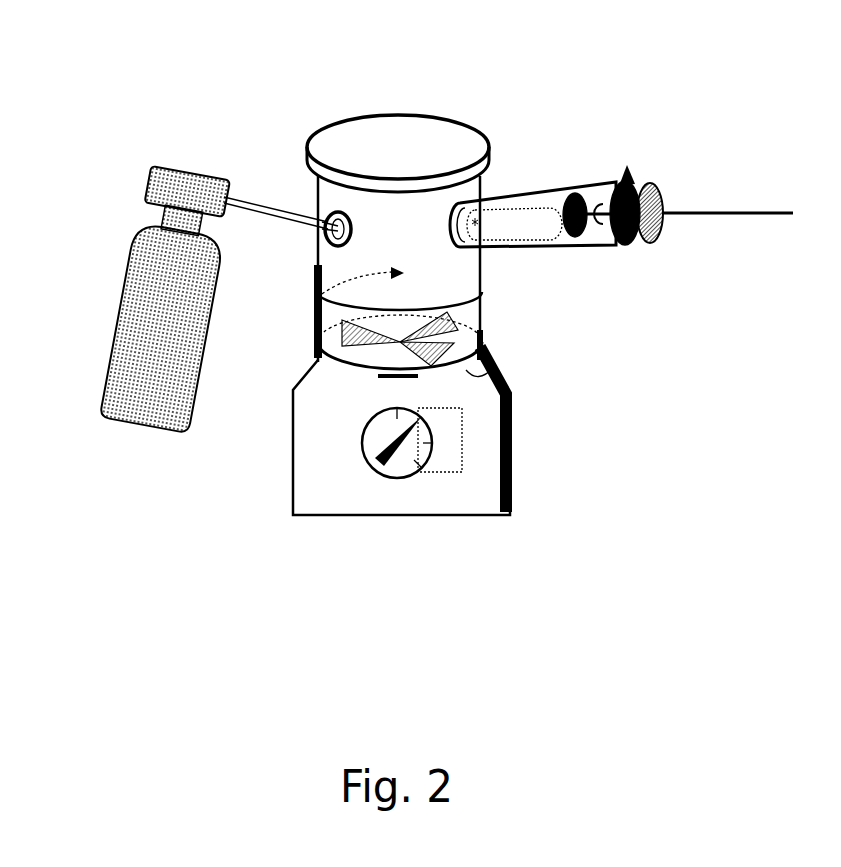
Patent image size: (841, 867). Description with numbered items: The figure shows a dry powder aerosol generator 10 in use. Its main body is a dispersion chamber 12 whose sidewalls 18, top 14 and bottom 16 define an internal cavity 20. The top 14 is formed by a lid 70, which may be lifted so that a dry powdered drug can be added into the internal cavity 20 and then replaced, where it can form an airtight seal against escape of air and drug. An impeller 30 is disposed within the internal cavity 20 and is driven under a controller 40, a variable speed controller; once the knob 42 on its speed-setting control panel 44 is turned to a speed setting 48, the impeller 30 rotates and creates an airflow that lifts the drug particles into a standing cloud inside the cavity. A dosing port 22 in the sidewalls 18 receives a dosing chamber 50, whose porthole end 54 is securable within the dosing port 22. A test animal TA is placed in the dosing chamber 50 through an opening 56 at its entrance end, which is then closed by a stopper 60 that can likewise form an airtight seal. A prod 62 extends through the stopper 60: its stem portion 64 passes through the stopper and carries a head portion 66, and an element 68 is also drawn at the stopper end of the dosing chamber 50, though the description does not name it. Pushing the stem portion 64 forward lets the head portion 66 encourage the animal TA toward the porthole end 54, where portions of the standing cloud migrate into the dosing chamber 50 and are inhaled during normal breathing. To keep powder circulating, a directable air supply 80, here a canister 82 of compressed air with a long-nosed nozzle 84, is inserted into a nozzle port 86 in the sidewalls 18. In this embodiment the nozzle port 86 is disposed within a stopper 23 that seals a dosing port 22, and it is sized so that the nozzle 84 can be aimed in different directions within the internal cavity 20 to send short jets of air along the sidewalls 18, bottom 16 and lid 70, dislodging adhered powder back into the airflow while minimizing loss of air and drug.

The dry powder aerosol generator 10 is at (244, 103).
The dispersion chamber 12 is at (388, 103).
The top 14 is at (353, 152).
The bottom 16 is at (512, 370).
The sidewalls 18 is at (483, 288).
The internal cavity 20 is at (357, 275).
The dosing port 22 is at (322, 217).
The stopper 23 is at (318, 250).
The impeller 30 is at (468, 335).
The controller 40 is at (453, 516).
The knob 42 is at (397, 460).
The control panel 44 is at (362, 446).
The speed setting 48 is at (462, 417).
The dosing chamber 50 is at (567, 248).
The porthole end 54 is at (488, 198).
The opening 56 is at (632, 182).
The stopper 60 is at (672, 203).
The prod 62 is at (598, 206).
The stem portion 64 is at (790, 212).
The head portion 66 is at (572, 195).
The hub 68 is at (668, 226).
The lid 70 is at (442, 142).
The directable air supply 80 is at (107, 268).
The canister 82 is at (100, 397).
The nozzle 84 is at (246, 201).
The nozzle port 86 is at (320, 233).
The test animal TA is at (528, 218).